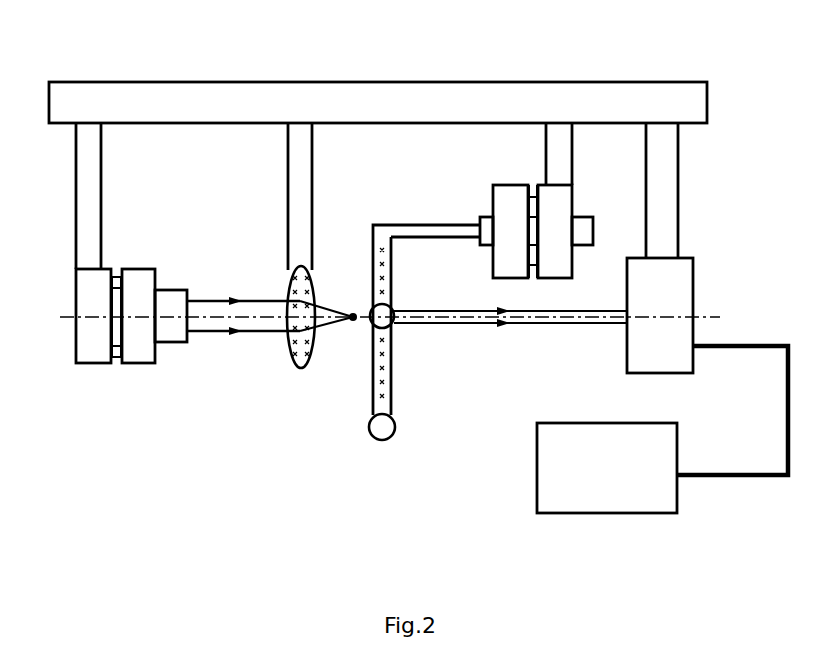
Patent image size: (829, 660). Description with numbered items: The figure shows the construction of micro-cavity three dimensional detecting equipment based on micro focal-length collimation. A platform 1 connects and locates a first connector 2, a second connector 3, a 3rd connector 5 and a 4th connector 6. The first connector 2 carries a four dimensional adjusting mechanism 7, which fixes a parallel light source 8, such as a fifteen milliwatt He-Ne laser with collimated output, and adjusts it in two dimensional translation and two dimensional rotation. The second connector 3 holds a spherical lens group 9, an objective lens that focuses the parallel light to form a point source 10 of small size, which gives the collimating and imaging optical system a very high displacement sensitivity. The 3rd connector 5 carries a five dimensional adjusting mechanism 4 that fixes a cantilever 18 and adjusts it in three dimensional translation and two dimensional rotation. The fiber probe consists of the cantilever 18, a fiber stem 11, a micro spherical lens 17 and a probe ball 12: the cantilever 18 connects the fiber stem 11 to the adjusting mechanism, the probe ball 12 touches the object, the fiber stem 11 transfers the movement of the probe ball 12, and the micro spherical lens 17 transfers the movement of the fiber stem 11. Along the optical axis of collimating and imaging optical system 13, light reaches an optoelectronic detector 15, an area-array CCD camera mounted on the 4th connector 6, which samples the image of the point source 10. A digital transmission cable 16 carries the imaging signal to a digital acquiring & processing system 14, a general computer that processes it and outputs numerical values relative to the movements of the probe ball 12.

The platform 1 is at (72, 105).
The first connector 2 is at (88, 143).
The second connector 3 is at (298, 143).
The five dimensional adjusting mechanism 4 is at (514, 210).
The 3rd connector 5 is at (558, 143).
The 4th connector 6 is at (661, 154).
The four dimensional adjusting mechanism 7 is at (72, 343).
The parallel light source 8 is at (174, 327).
The spherical lens group 9 is at (297, 318).
The point source 10 is at (352, 320).
The fiber stem 11 is at (382, 340).
The probe ball 12 is at (382, 427).
The optical axis of collimating and imaging optical system 13 is at (535, 317).
The digital acquiring & processing system 14 is at (568, 470).
The optoelectronic detector 15 is at (665, 343).
The digital transmission cable 16 is at (753, 478).
The micro spherical lens 17 is at (377, 330).
The cantilever 18 is at (425, 230).